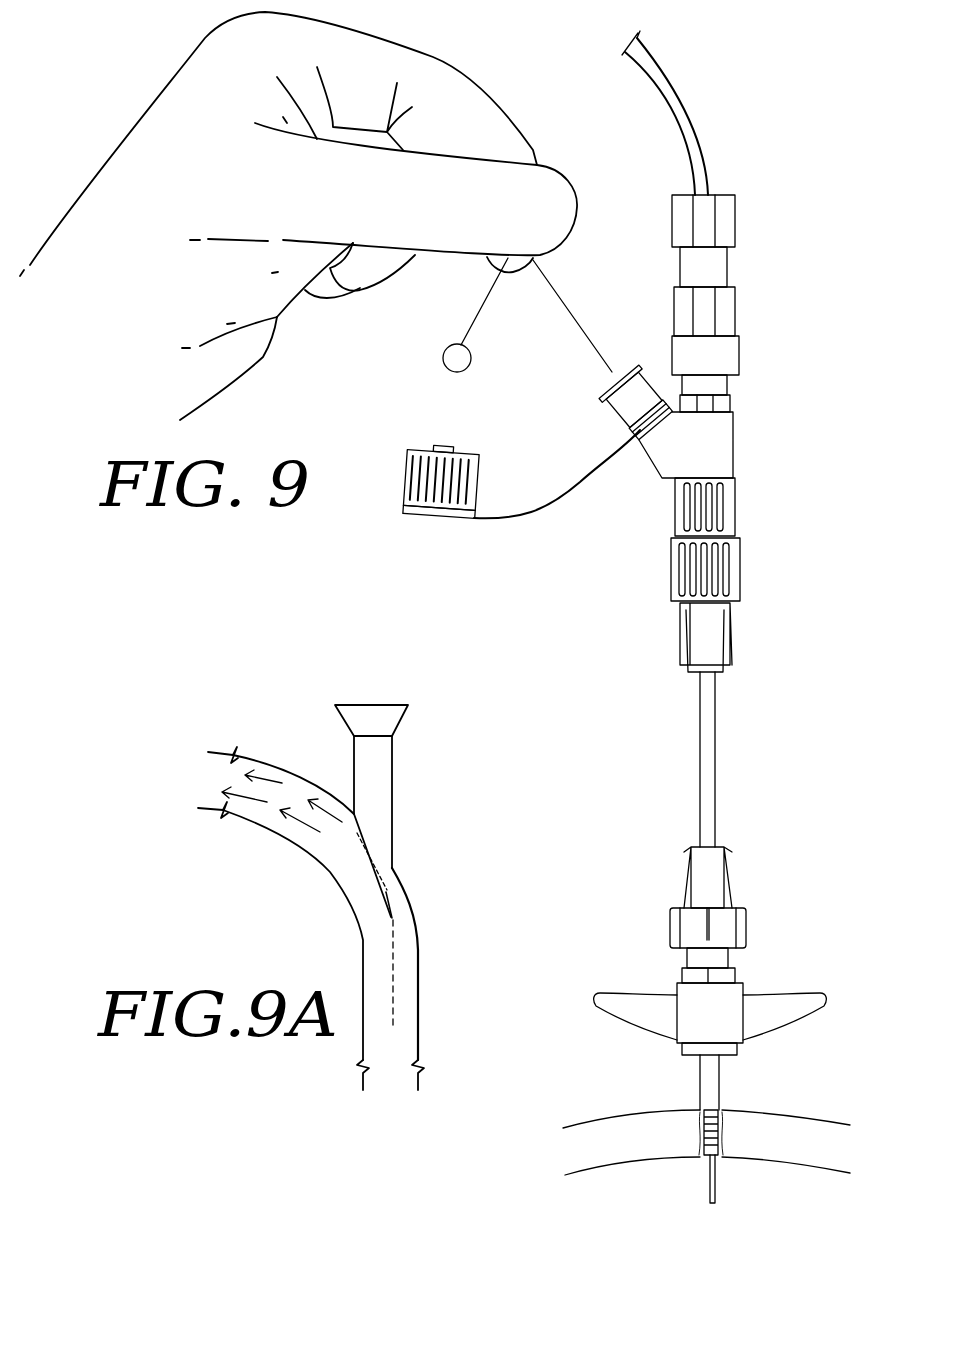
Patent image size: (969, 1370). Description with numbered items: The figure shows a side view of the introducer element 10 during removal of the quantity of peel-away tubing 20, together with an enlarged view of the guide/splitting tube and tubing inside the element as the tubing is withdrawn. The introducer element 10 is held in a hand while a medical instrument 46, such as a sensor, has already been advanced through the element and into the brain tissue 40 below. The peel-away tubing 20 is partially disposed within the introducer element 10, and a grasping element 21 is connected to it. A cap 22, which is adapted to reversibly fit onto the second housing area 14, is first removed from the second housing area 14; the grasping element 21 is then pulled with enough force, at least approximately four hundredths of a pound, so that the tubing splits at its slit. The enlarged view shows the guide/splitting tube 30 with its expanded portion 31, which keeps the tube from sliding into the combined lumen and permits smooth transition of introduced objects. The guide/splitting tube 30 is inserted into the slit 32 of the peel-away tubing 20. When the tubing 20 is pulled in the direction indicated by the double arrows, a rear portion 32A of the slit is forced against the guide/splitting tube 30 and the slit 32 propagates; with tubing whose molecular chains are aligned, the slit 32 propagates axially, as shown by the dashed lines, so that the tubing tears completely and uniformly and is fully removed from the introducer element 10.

In FIG. 9, the introducer element 10 is at (750, 337).
In FIG. 9, the second housing area 14 is at (618, 420).
In FIG. 9, the peel-away tubing 20 is at (566, 292).
In FIG. 9A, the peel-away tubing 20 is at (343, 951).
In FIG. 9, the grasping element 21 is at (446, 352).
In FIG. 9, the cap 22 is at (405, 470).
In FIG. 9A, the guide/splitting tube 30 is at (397, 786).
In FIG. 9A, the expanded portion 31 is at (388, 723).
In FIG. 9A, the slit 32 is at (341, 851).
In FIG. 9A, the rear portion of the slit 32A is at (378, 923).
In FIG. 9, the brain tissue 40 is at (573, 1199).
In FIG. 9, the medical instrument 46 is at (687, 22).